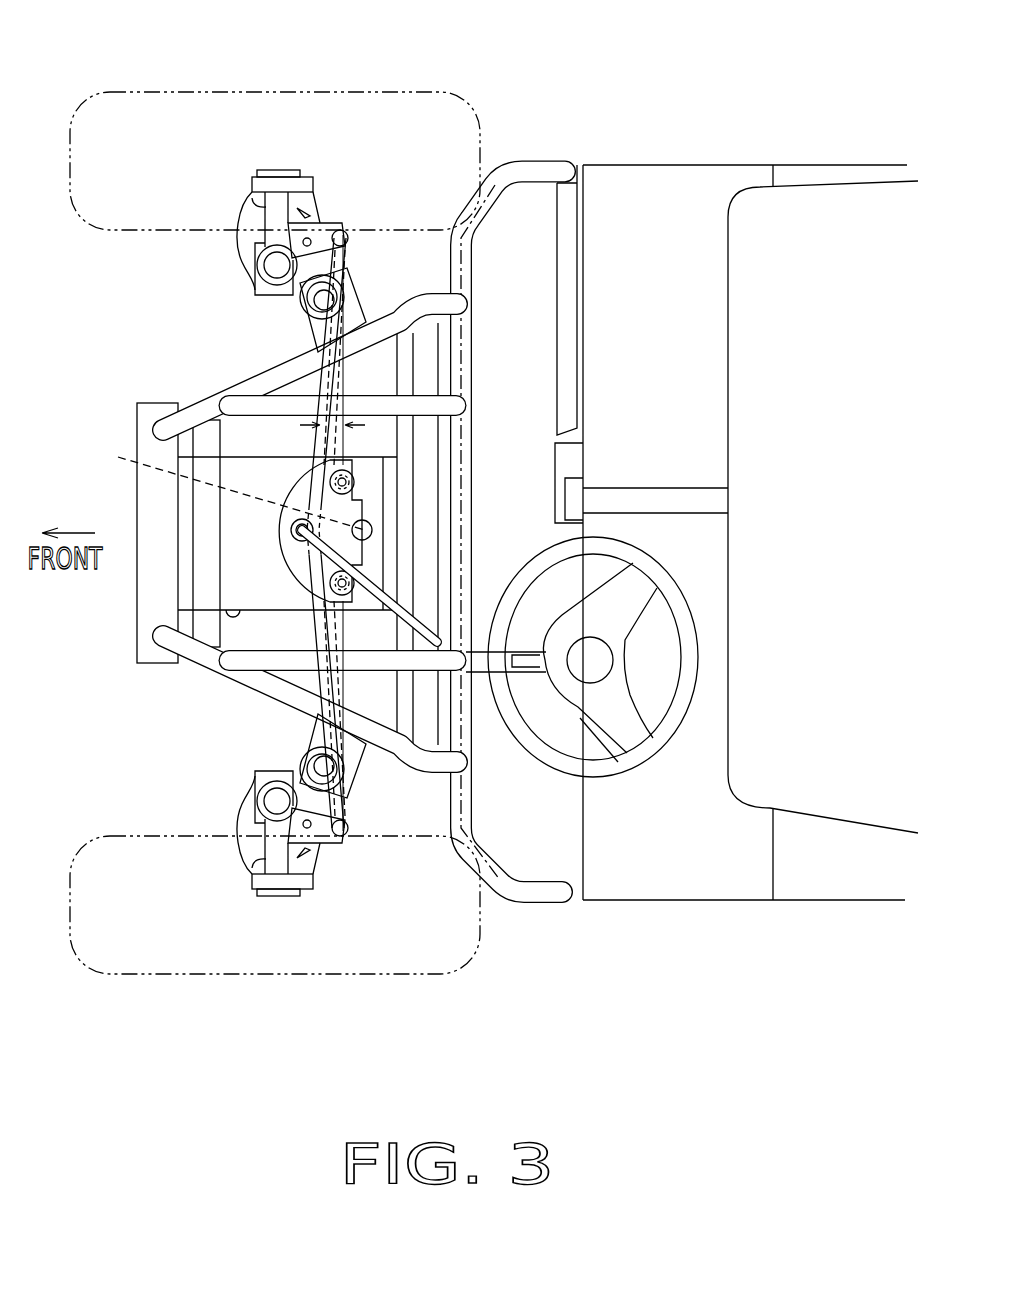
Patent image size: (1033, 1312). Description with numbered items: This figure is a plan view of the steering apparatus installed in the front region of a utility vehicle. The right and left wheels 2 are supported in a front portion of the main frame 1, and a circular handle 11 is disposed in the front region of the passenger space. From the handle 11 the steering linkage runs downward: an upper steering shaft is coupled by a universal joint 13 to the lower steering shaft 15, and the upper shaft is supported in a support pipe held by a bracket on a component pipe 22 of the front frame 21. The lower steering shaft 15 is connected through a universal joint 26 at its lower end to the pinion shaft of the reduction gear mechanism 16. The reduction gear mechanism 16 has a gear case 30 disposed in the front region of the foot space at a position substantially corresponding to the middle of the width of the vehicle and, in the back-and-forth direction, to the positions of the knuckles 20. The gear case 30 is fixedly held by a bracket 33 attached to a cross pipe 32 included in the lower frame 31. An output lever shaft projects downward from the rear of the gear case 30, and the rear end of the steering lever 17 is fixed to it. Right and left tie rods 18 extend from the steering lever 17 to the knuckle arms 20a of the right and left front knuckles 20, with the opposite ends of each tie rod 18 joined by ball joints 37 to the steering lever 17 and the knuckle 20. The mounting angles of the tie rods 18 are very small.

The main frame 1 is at (542, 427).
The wheels 2 is at (145, 112).
The handle 11 is at (667, 743).
The universal joint 13 is at (460, 675).
The lower steering shaft 15 is at (410, 613).
The reduction gear mechanism 16 is at (286, 464).
The steering lever 17 is at (221, 484).
The tie rods 18 is at (322, 377).
The front knuckles 20 is at (247, 222).
The knuckle arms 20a is at (323, 230).
The front frame 21 is at (517, 893).
The component pipe 22 is at (252, 666).
The universal joint 26 is at (292, 528).
The gear case 30 is at (297, 567).
The lower frame 31 is at (412, 312).
The cross pipe 32 is at (403, 368).
The bracket 33 is at (373, 528).
The ball joints 37 is at (345, 232).